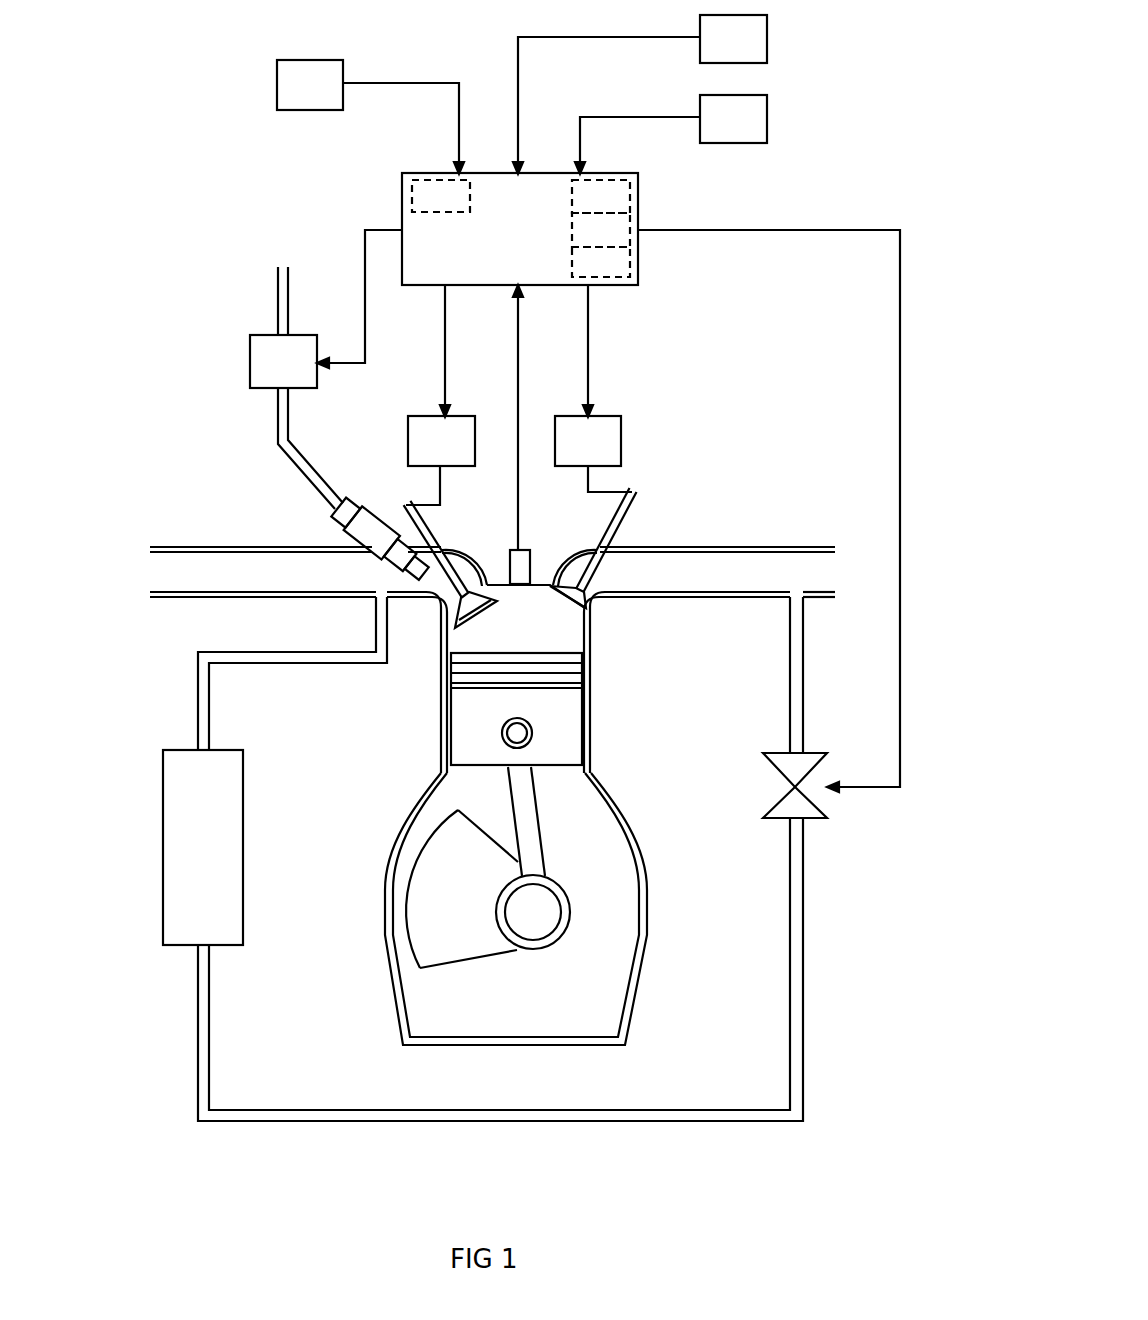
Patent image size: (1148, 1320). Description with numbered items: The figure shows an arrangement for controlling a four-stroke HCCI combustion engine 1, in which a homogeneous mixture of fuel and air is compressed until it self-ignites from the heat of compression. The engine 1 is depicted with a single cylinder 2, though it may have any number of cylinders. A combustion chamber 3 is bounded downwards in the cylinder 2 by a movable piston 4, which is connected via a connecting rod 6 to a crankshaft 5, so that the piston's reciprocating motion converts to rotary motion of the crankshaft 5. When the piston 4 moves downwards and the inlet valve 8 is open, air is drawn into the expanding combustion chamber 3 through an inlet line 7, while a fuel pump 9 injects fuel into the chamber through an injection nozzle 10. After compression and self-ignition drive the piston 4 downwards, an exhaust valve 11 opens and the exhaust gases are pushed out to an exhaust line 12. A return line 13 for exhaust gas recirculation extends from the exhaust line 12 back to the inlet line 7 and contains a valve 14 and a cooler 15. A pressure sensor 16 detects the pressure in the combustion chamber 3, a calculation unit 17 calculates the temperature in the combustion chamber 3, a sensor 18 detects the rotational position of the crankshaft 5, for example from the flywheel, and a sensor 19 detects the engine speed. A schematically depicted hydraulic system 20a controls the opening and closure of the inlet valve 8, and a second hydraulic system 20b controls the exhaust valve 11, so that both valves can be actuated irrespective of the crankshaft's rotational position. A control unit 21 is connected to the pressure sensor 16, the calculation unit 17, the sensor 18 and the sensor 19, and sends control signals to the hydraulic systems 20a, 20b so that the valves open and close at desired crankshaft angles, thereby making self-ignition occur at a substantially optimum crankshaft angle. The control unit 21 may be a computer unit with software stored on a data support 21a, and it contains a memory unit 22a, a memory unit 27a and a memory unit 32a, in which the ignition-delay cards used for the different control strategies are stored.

The combustion engine 1 is at (608, 705).
The cylinder 2 is at (592, 633).
The combustion chamber 3 is at (527, 632).
The piston 4 is at (515, 697).
The crankshaft 5 is at (463, 922).
The connecting rod 6 is at (527, 817).
The inlet line 7 is at (270, 565).
The inlet valve 8 is at (443, 570).
The fuel pump 9 is at (262, 349).
The injection nozzle 10 is at (370, 530).
The exhaust valve 11 is at (603, 537).
The exhaust line 12 is at (723, 568).
The return line 13 is at (800, 985).
The valve 14 is at (793, 768).
The cooler 15 is at (195, 855).
The pressure sensor 16 is at (522, 565).
The calculation unit 17 is at (305, 77).
The sensor 18 is at (728, 38).
The sensor 19 is at (743, 118).
The hydraulic system 20a is at (440, 442).
The hydraulic system 20b is at (605, 443).
The control unit 21 is at (528, 248).
The data support 21a is at (432, 198).
The memory unit 22a is at (610, 202).
The memory unit 27a is at (605, 232).
The memory unit 32a is at (610, 258).